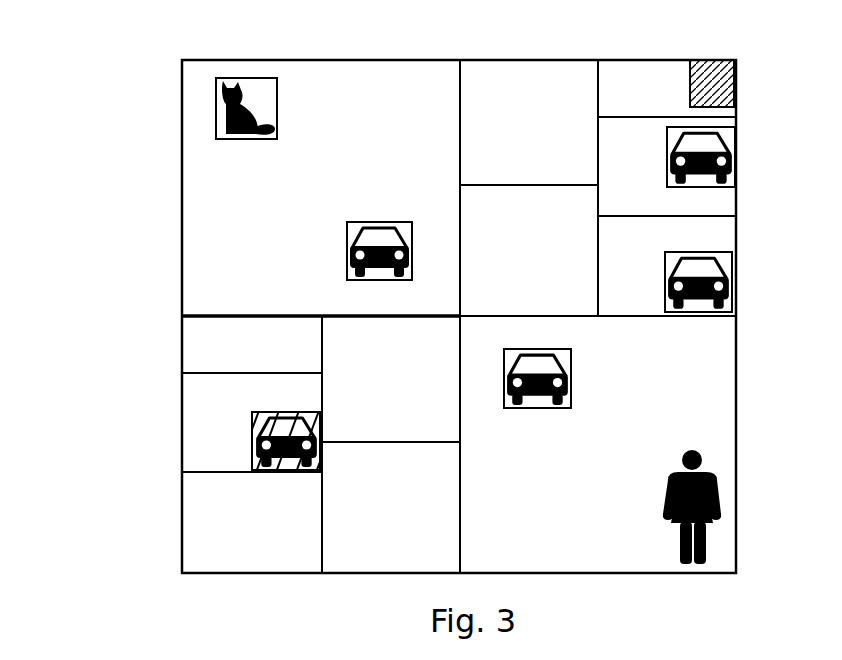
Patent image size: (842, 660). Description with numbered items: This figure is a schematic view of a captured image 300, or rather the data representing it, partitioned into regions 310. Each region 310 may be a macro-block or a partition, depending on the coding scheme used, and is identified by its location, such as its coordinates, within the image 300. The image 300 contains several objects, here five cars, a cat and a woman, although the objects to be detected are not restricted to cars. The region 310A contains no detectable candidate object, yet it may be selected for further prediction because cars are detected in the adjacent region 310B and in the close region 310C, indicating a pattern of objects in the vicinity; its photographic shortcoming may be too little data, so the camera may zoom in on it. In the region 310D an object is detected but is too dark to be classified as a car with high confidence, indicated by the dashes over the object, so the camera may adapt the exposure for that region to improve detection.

The image 300 is at (178, 178).
The region 310 is at (459, 316).
The region 310A is at (667, 88).
The region 310B is at (667, 171).
The region 310C is at (669, 270).
The region 310D is at (261, 424).